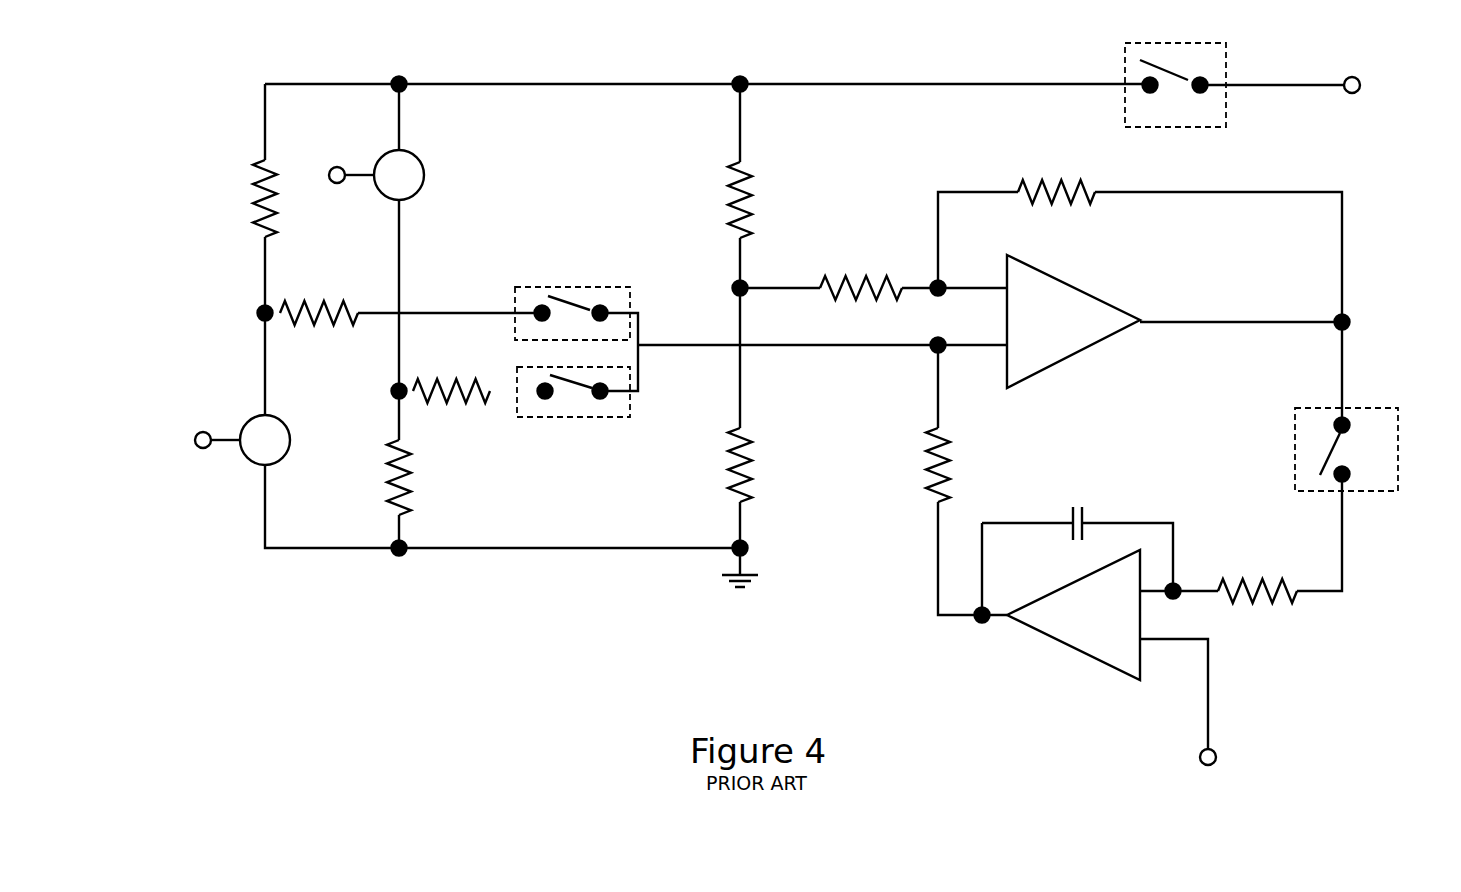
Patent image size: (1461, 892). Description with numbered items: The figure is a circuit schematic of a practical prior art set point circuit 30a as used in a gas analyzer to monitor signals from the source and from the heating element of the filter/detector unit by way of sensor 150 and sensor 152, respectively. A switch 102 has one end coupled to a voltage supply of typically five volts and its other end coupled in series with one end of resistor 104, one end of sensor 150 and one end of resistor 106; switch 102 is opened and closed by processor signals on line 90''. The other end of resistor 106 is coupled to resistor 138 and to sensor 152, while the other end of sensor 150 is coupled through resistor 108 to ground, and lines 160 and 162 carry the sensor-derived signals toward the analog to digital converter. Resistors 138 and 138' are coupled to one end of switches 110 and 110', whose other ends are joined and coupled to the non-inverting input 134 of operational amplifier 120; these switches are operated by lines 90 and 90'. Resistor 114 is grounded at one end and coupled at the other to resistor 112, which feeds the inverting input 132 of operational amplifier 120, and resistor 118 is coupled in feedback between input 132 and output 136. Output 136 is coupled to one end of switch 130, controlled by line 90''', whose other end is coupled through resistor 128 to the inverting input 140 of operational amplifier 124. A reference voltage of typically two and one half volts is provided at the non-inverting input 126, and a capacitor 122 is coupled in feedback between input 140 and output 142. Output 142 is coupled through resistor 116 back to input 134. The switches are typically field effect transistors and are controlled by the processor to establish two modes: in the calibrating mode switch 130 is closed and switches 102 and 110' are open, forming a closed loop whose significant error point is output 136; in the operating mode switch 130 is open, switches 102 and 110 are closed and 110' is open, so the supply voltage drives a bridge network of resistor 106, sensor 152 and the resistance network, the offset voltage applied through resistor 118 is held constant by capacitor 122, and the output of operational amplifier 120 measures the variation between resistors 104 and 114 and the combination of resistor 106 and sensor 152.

The set point circuit 30a is at (770, 659).
The line 90 is at (574, 245).
The line 90' is at (572, 460).
The line 90'' is at (1172, 152).
The line 90''' is at (1244, 450).
The switch 102 is at (1226, 127).
The resistor 104 is at (752, 202).
The resistor 106 is at (276, 226).
The resistor 108 is at (411, 490).
The switch 110 is at (604, 292).
The switch 110' is at (606, 420).
The resistor 112 is at (882, 276).
The resistor 114 is at (752, 475).
The resistor 116 is at (950, 458).
The resistor 118 is at (1062, 206).
The operational amplifier 120 is at (1075, 355).
The capacitor 122 is at (1087, 515).
The operational amplifier 124 is at (1065, 650).
The non-inverting input 126 is at (1216, 762).
The resistor 128 is at (1262, 604).
The switch 130 is at (1382, 491).
The inverting input 132 is at (945, 280).
The non-inverting input 134 is at (931, 352).
The output 136 is at (1350, 326).
The resistor 138 is at (309, 339).
The resistor 138' is at (453, 415).
The inverting input 140 is at (1180, 585).
The output 142 is at (975, 623).
The sensor 150 is at (418, 192).
The sensor 152 is at (288, 455).
The line 160 is at (332, 168).
The line 162 is at (197, 434).